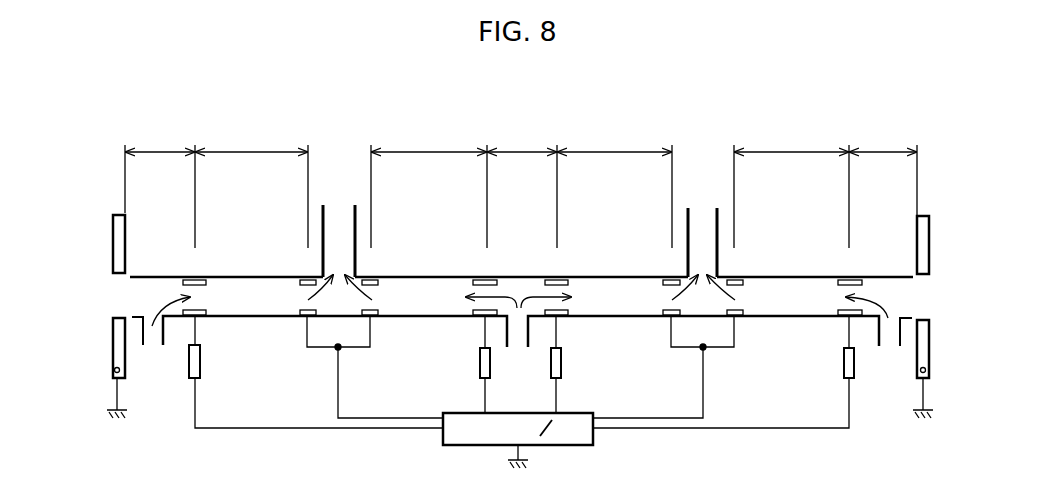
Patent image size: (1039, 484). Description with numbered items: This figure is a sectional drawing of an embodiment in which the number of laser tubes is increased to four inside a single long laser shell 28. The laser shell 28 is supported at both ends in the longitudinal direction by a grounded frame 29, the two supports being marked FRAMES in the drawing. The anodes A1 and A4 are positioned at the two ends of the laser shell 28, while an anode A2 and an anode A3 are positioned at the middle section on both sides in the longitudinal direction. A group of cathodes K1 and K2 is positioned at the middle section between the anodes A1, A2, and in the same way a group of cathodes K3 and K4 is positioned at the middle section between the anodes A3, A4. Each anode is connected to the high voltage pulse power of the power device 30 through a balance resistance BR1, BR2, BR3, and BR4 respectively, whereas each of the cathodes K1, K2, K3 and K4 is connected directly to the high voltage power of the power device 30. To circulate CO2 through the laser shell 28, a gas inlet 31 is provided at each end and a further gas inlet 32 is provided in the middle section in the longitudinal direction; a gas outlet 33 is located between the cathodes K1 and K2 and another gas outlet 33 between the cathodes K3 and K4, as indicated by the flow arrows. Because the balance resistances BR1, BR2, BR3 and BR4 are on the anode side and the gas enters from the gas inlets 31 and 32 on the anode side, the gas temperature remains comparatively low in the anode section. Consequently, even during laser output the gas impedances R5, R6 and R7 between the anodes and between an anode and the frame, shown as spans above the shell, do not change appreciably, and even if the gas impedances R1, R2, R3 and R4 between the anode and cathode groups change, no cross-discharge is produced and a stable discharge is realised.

The laser shell 28 is at (797, 277).
The frame 29 is at (930, 253).
The power device 30 is at (595, 445).
The gas inlet 31 is at (152, 345).
The gas inlet 32 is at (517, 338).
The gas outlet 33 is at (328, 243).
The anode A1 is at (180, 290).
The anode A2 is at (491, 284).
The anode A3 is at (546, 284).
The anode A4 is at (862, 286).
The cathode K1 is at (300, 295).
The cathode K2 is at (378, 295).
The cathode K3 is at (662, 295).
The cathode K4 is at (740, 295).
The balance resistance BR1 is at (200, 378).
The balance resistance BR2 is at (490, 378).
The balance resistance BR3 is at (561, 378).
The balance resistance BR4 is at (855, 379).
The gas impedance R1 is at (251, 140).
The gas impedance R2 is at (429, 140).
The gas impedance R3 is at (614, 140).
The gas impedance R4 is at (791, 140).
The gas impedance R5 is at (522, 140).
The gas impedance R6 is at (160, 140).
The gas impedance R7 is at (883, 140).
The frames FRAMES is at (963, 201).